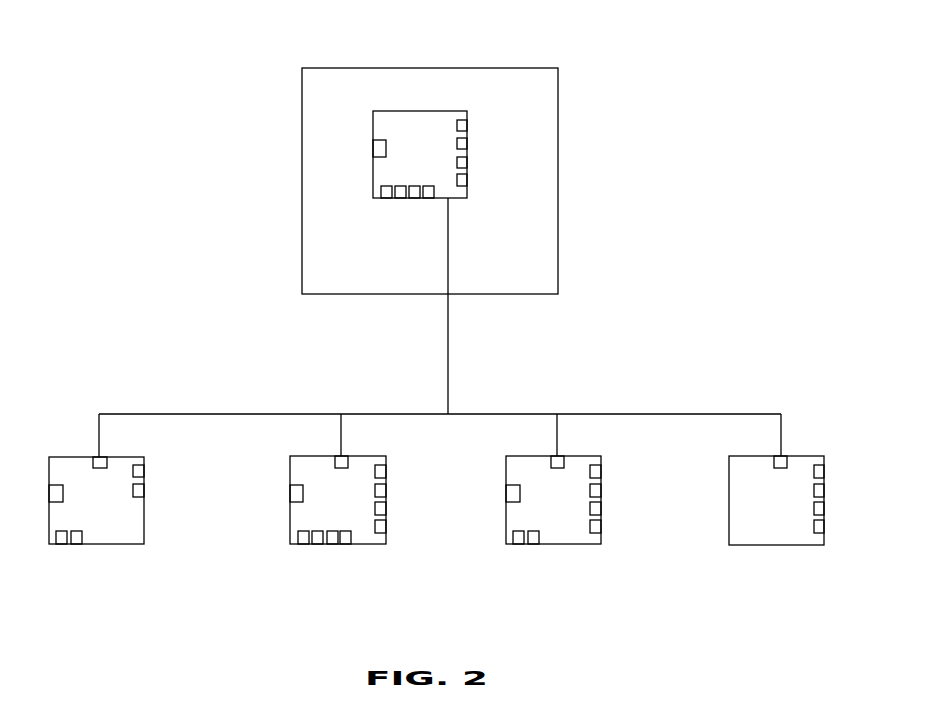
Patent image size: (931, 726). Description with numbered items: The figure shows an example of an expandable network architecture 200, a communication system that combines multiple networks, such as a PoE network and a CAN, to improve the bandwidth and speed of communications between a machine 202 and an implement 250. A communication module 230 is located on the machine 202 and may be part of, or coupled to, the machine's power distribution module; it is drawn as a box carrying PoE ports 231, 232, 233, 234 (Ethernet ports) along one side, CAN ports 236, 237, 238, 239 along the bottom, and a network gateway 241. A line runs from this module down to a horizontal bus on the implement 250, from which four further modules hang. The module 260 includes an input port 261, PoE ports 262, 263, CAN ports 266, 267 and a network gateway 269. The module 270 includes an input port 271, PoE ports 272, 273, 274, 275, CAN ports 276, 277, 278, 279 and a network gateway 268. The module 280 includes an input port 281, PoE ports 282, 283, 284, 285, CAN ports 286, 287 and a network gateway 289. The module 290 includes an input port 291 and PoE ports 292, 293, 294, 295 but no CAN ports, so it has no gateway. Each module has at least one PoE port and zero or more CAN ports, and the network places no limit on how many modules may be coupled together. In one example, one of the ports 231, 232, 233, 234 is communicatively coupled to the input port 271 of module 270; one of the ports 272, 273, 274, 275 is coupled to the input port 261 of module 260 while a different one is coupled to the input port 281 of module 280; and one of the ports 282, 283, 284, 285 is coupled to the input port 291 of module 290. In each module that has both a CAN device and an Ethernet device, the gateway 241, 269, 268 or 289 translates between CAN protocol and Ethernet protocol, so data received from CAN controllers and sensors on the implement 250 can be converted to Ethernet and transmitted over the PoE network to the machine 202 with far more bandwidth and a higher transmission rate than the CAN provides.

The machine 202 is at (558, 33).
The communication module 230 is at (451, 111).
The PoE port 231 is at (468, 125).
The PoE port 232 is at (468, 143).
The PoE port 233 is at (468, 162).
The PoE port 234 is at (468, 180).
The CAN port 236 is at (388, 200).
The CAN port 237 is at (398, 200).
The CAN port 238 is at (415, 200).
The CAN port 239 is at (430, 200).
The network gateway 241 is at (373, 149).
The expandable network architecture 200 is at (448, 365).
The implement 250 is at (708, 382).
The communication module 260 is at (125, 457).
The input port 261 is at (93, 462).
The PoE port 262 is at (144, 472).
The PoE port 263 is at (144, 490).
The CAN port 266 is at (76, 545).
The CAN port 267 is at (60, 545).
The network gateway 269 is at (49, 497).
The communication module 270 is at (367, 456).
The input port 271 is at (337, 462).
The PoE port 272 is at (386, 472).
The PoE port 273 is at (386, 490).
The PoE port 274 is at (386, 508).
The PoE port 275 is at (386, 527).
The CAN port 276 is at (345, 545).
The CAN port 277 is at (332, 545).
The CAN port 278 is at (317, 545).
The CAN port 279 is at (303, 545).
The network gateway 268 is at (290, 497).
The communication module 280 is at (582, 456).
The input port 281 is at (552, 462).
The PoE port 282 is at (601, 472).
The PoE port 283 is at (601, 490).
The PoE port 284 is at (601, 508).
The PoE port 285 is at (601, 527).
The CAN port 286 is at (533, 545).
The CAN port 287 is at (519, 545).
The network gateway 289 is at (506, 497).
The communication module 290 is at (805, 456).
The input port 291 is at (775, 462).
The PoE port 292 is at (824, 472).
The PoE port 293 is at (824, 490).
The PoE port 294 is at (824, 508).
The PoE port 295 is at (824, 527).